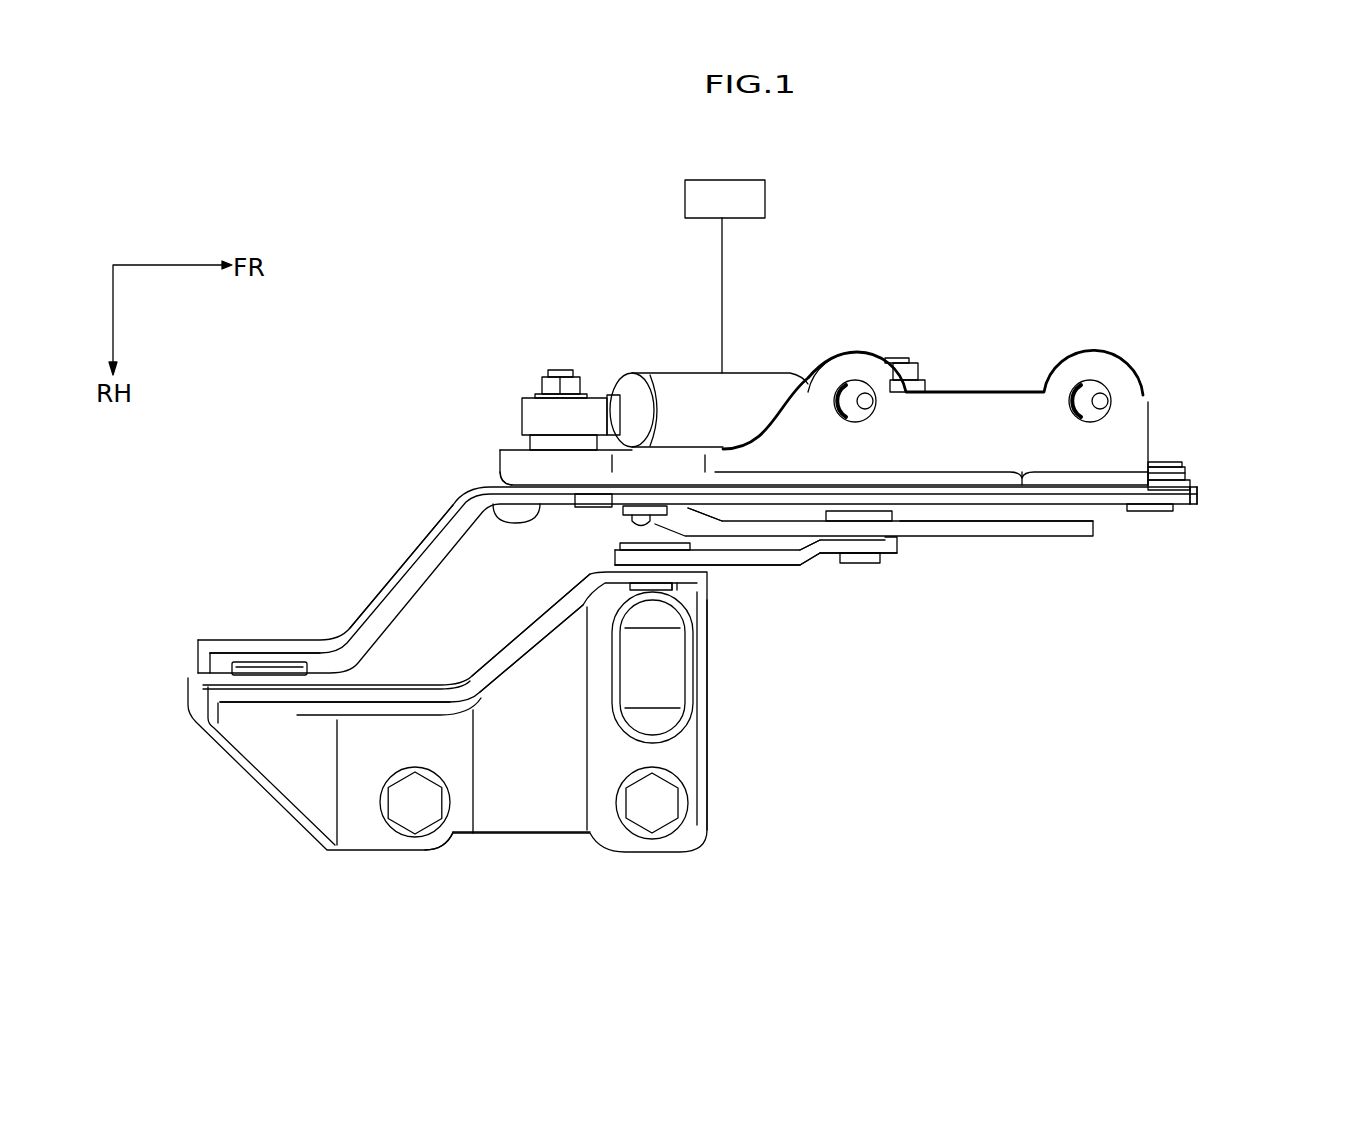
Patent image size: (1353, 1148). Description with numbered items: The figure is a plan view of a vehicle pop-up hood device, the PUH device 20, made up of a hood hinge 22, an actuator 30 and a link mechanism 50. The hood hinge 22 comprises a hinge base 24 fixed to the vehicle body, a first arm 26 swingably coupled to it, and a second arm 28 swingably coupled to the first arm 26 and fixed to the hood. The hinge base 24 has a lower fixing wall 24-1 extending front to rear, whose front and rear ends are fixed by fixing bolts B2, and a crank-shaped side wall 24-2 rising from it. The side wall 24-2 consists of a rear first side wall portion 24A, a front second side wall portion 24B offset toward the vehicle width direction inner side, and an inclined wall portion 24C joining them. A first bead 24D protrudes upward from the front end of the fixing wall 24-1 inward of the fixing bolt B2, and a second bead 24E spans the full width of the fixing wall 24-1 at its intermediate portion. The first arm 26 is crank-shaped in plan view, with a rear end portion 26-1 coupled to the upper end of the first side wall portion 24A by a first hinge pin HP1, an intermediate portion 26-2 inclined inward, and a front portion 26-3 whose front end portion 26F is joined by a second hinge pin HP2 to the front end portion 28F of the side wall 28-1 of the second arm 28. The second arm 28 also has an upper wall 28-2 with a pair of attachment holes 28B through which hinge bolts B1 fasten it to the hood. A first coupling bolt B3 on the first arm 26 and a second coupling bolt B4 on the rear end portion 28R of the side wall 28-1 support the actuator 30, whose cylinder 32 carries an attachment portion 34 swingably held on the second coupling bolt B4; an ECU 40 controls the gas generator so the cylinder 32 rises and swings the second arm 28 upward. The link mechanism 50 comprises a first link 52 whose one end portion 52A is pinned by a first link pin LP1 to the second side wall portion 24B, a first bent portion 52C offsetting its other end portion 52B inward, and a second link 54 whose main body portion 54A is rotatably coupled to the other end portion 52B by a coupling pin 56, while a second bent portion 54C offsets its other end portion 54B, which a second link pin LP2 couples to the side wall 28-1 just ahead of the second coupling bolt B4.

The PUH device 20 is at (1234, 272).
The hood hinge 22 is at (222, 543).
The hinge base 24 is at (333, 853).
The fixing wall 24-1 is at (453, 826).
The side wall 24-2 is at (530, 613).
The first side wall portion 24A is at (400, 686).
The second side wall portion 24B is at (693, 688).
The inclined wall portion 24C is at (552, 637).
The first bead 24D is at (620, 718).
The second bead 24E is at (535, 815).
The first arm 26 is at (1198, 493).
The rear end portion 26-1 is at (317, 667).
The intermediate portion 26-2 is at (440, 568).
The front portion 26-3 is at (1115, 506).
The front end portion 26F is at (1185, 506).
The second arm 28 is at (1147, 386).
The side wall 28-1 is at (1022, 488).
The upper wall 28-2 is at (963, 404).
The attachment holes 28B is at (843, 385).
The front end portion 28F is at (1178, 465).
The rear end portion 28R is at (500, 505).
The actuator 30 is at (680, 372).
The cylinder 32 is at (644, 377).
The attachment portion 34 is at (522, 407).
The ECU 40 is at (766, 200).
The link mechanism 50 is at (955, 610).
The first link 52 is at (890, 553).
The one end portion 52A is at (735, 567).
The other end portion 52B is at (827, 555).
The first bent portion 52C is at (820, 549).
The second link 54 is at (1082, 536).
The main body portion 54A is at (1040, 538).
The other end portion 54B is at (613, 513).
The second bent portion 54C is at (718, 500).
The coupling pin 56 is at (858, 511).
The hinge bolts B1 is at (854, 385).
The fixing bolts B2 is at (410, 823).
The first coupling bolt B3 is at (905, 357).
The second coupling bolt B4 is at (560, 368).
The first hinge pin HP1 is at (243, 662).
The second hinge pin HP2 is at (1160, 508).
The first link pin LP1 is at (625, 543).
The second link pin LP2 is at (680, 522).